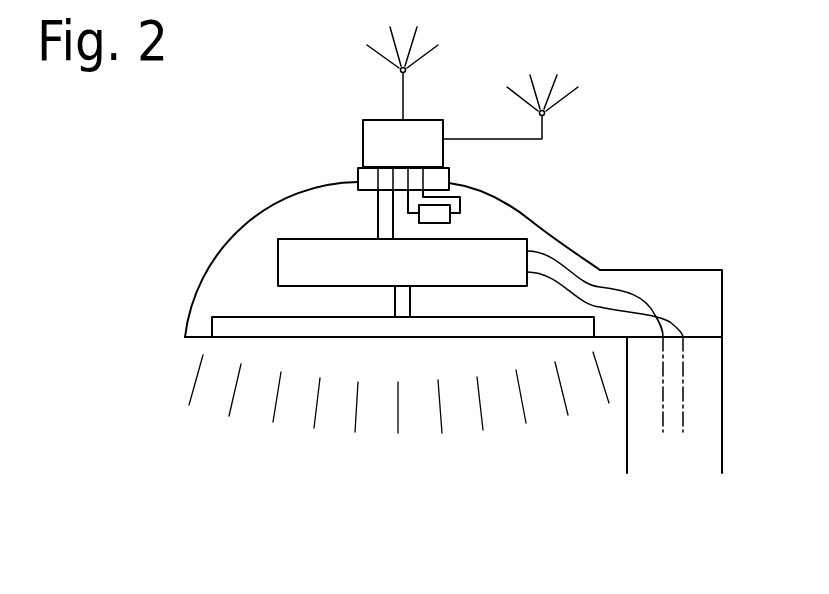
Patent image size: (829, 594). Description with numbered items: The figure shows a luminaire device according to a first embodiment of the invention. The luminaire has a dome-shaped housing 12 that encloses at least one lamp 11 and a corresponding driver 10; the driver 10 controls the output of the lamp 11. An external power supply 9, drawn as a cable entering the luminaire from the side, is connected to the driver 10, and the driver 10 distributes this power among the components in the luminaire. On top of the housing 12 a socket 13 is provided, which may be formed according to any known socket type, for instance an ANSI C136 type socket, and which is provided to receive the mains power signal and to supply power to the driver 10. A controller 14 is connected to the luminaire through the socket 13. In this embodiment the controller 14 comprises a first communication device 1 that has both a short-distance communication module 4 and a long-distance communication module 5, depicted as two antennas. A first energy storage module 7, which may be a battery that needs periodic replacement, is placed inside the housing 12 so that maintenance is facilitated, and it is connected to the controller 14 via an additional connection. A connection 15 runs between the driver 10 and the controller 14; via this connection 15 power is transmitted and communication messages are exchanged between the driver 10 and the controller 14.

The first communication device 1 is at (395, 154).
The short-distance communication module 4 is at (478, 138).
The long-distance communication module 5 is at (405, 83).
The first energy storage module 7 is at (440, 217).
The external power supply 9 is at (622, 290).
The driver 10 is at (290, 269).
The lamp 11 is at (362, 327).
The housing 12 is at (242, 223).
The socket 13 is at (361, 180).
The controller 14 is at (382, 140).
The connection 15 is at (378, 207).